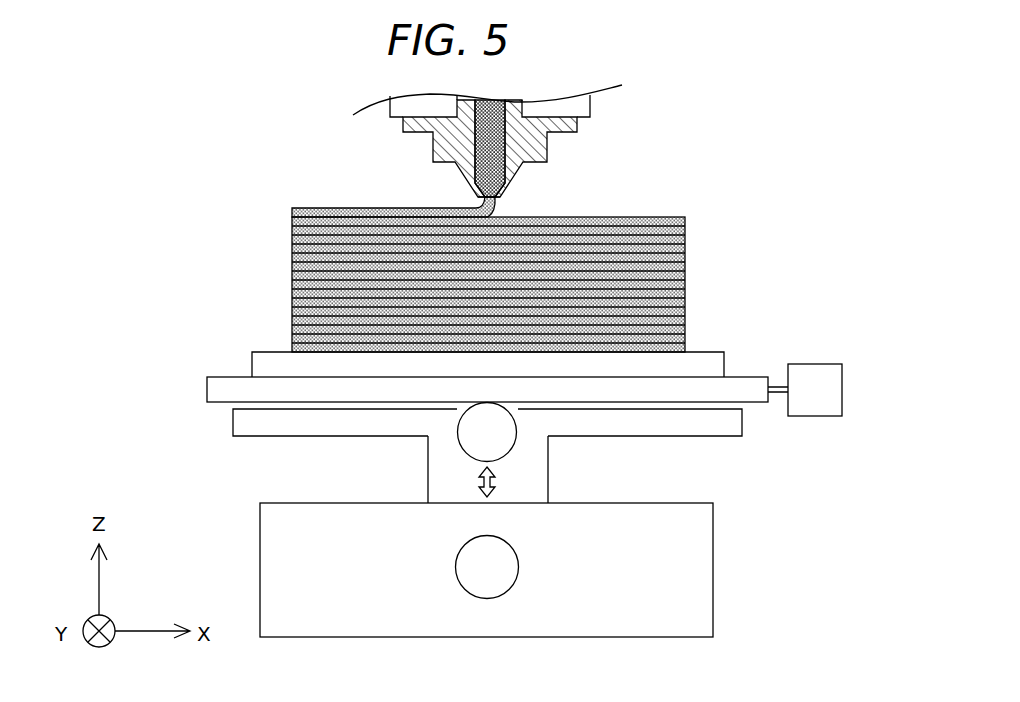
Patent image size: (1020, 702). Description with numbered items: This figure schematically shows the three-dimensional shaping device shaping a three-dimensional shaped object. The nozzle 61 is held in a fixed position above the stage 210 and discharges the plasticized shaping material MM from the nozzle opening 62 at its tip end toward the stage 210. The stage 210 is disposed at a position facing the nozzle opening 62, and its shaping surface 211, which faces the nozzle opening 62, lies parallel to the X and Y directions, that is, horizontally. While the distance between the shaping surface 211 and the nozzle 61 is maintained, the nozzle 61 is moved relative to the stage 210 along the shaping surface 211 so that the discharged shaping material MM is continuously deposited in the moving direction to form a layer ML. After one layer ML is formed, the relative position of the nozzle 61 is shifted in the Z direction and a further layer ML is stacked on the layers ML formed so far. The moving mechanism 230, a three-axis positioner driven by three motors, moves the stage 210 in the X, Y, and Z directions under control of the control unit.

The nozzle 61 is at (412, 153).
The nozzle opening 62 is at (477, 198).
The shaping material MM is at (497, 138).
The layers ML is at (292, 277).
The shaping surface 211 is at (693, 352).
The stage 210 is at (705, 365).
The moving mechanism 230 is at (758, 493).